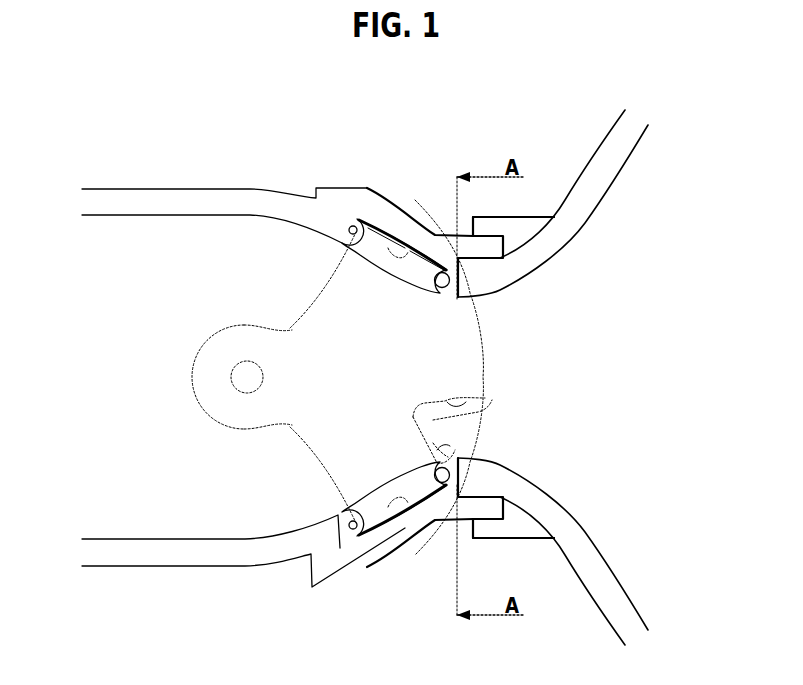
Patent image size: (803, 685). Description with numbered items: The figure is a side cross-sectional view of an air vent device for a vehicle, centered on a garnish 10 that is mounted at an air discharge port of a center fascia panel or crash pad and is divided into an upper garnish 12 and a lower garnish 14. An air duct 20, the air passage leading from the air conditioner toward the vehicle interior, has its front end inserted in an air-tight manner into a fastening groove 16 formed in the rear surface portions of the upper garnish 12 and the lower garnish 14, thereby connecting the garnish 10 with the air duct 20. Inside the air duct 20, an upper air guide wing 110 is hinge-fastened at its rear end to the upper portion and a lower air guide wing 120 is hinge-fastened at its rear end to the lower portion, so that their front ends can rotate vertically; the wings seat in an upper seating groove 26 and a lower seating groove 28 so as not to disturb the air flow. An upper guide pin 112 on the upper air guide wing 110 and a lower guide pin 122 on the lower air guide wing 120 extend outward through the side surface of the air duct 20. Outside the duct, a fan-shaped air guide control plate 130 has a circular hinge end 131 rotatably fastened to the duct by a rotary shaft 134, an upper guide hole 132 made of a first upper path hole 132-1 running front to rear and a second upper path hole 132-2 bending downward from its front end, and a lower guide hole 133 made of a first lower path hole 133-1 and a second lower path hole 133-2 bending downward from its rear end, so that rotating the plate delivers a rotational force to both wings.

The garnish 10 is at (699, 313).
The upper garnish 12 is at (564, 227).
The lower garnish 14 is at (566, 528).
The fastening groove 16 is at (490, 227).
The air duct 20 is at (157, 180).
The upper seating groove 26 is at (360, 218).
The lower seating groove 28 is at (390, 548).
The upper air guide wing 110 is at (340, 256).
The upper guide pin 112 is at (458, 288).
The lower air guide wing 120 is at (342, 501).
The lower guide pin 122 is at (441, 490).
The air guide control plate 130 is at (188, 355).
The hinge end 131 is at (200, 387).
The upper guide hole 132 is at (517, 132).
The first upper path hole 132-1 is at (418, 223).
The second upper path hole 132-2 is at (424, 224).
The lower guide hole 133 is at (591, 368).
The first lower path hole 133-1 is at (450, 403).
The second lower path hole 133-2 is at (437, 450).
The rotary shaft 134 is at (237, 381).